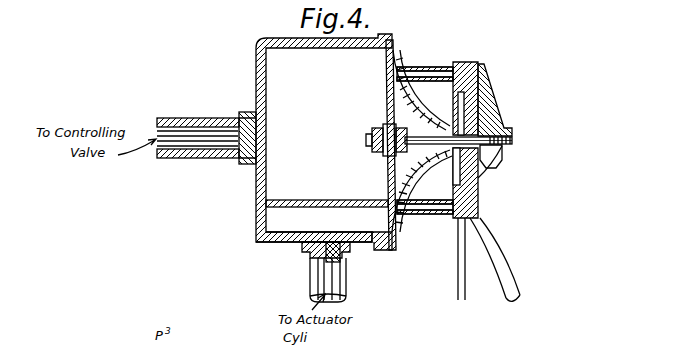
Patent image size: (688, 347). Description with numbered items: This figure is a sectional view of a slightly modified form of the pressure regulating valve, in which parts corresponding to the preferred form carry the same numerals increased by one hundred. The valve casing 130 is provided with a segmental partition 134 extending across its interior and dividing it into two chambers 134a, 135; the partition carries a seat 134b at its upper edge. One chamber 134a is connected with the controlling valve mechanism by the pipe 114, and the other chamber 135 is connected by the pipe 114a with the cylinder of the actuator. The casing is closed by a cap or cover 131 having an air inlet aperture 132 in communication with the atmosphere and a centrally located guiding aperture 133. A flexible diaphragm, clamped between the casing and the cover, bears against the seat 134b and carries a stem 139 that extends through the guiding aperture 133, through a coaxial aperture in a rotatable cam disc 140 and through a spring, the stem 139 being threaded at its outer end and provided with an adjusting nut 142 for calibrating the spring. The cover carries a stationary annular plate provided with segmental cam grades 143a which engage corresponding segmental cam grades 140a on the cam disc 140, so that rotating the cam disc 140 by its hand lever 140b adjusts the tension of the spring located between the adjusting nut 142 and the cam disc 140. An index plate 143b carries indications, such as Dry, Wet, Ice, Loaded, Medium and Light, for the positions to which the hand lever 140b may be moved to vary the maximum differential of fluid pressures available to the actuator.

The valve casing 130 is at (265, 40).
The pipe 114 is at (210, 114).
The pipe 114a is at (338, 270).
The segmental partition 134 is at (314, 205).
The chamber 134a is at (327, 124).
The seat 134b is at (396, 226).
The chamber 135 is at (292, 222).
The cap or cover 131 is at (398, 60).
The air inlet aperture 132 is at (428, 118).
The guiding aperture 133 is at (484, 114).
The stem 139 is at (508, 141).
The adjusting nut 142 is at (500, 154).
The rotatable cam disc 140 is at (466, 220).
The segmental cam grades 140a is at (478, 190).
The hand lever 140b is at (518, 292).
The segmental cam grades 143a is at (464, 62).
The index plate 143b is at (458, 284).